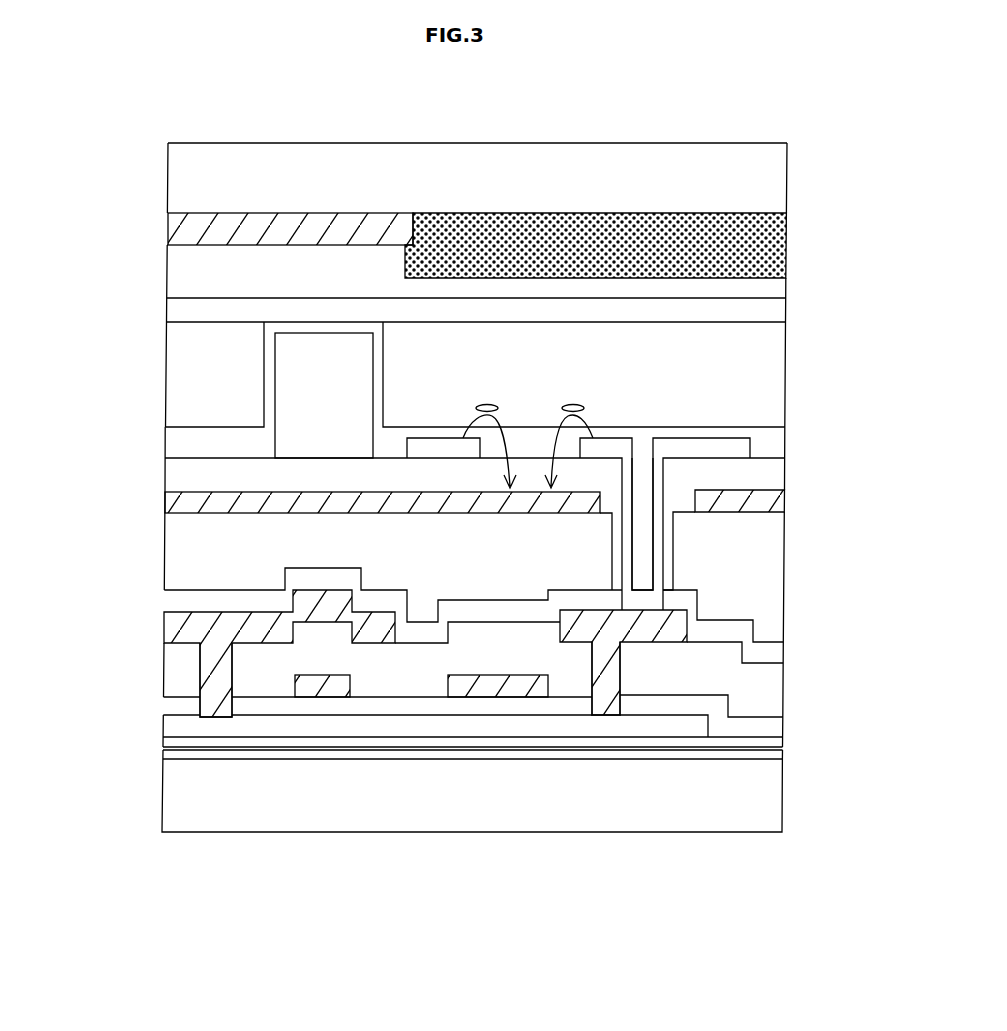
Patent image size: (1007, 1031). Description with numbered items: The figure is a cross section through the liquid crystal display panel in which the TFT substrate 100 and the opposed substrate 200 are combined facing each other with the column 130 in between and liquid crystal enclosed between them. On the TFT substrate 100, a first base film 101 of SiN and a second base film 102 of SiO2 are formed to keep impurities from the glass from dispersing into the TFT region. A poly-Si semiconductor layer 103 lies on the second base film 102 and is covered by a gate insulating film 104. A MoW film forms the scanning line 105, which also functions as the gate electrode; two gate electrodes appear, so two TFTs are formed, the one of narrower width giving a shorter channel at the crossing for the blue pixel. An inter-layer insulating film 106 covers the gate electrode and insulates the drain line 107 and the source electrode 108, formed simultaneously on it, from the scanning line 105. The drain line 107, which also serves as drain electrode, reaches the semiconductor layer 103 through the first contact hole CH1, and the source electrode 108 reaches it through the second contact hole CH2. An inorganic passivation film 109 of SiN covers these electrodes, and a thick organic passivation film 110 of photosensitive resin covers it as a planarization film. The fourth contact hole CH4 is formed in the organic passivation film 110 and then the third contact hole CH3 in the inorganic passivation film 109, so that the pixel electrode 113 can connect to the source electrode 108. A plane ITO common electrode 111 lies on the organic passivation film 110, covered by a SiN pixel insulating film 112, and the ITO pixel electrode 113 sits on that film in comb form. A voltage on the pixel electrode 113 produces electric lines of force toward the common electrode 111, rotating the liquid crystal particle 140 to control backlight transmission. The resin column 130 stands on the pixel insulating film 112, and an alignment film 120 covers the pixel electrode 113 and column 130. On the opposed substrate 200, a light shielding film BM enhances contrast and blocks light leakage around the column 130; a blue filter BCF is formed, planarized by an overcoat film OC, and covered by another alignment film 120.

The opposed substrate 200 is at (190, 178).
The light shielding film BM is at (185, 231).
The blue filter BCF is at (762, 243).
The overcoat film OC is at (780, 289).
The alignment film 120 is at (780, 312).
The column 130 is at (297, 417).
The liquid crystal particle 140 is at (578, 403).
The pixel electrode 113 is at (738, 448).
The pixel insulating film 112 is at (215, 470).
The common electrode 111 is at (190, 510).
The fourth contact hole CH4 is at (673, 535).
The third contact hole CH3 is at (665, 568).
The organic passivation film 110 is at (758, 615).
The source electrode 108 is at (672, 622).
The inorganic passivation film 109 is at (733, 630).
The drain line 107 is at (200, 630).
The first contact hole CH1 is at (200, 667).
The second contact hole CH2 is at (623, 670).
The inter-layer insulating film 106 is at (745, 698).
The scanning line 105 is at (330, 688).
The gate insulating film 104 is at (770, 740).
The semiconductor layer 103 is at (190, 732).
The second base film 102 is at (773, 755).
The first base film 101 is at (775, 758).
The TFT substrate 100 is at (190, 791).